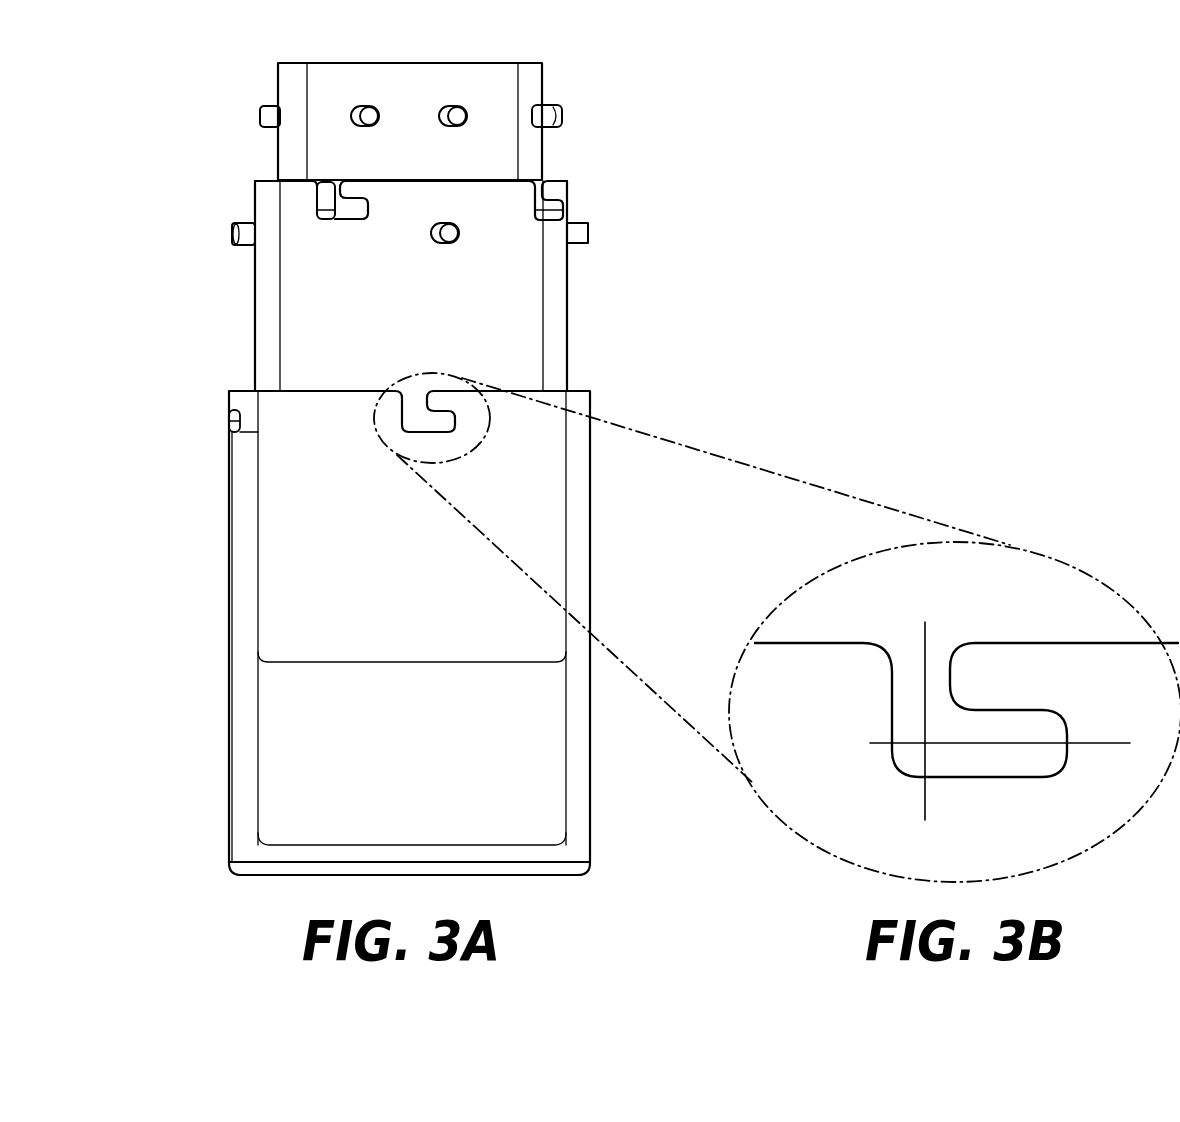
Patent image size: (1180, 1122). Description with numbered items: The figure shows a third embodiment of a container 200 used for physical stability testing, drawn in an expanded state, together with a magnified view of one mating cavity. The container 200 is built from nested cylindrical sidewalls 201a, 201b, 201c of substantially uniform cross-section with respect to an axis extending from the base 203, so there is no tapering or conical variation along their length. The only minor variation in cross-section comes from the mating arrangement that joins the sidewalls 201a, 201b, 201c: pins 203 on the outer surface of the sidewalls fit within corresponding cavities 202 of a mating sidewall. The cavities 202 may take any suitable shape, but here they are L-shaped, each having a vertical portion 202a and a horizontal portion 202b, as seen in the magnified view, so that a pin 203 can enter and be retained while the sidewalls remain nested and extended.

In FIG. 3A, the container 200 is at (134, 522).
In FIG. 3A, the sidewall 201a is at (247, 722).
In FIG. 3A, the sidewall 201b is at (273, 323).
In FIG. 3A, the sidewall 201c is at (313, 72).
In FIG. 3A, the cavity 202 is at (320, 203).
In FIG. 3B, the vertical portion 202a is at (923, 638).
In FIG. 3B, the horizontal portion 202b is at (877, 747).
In FIG. 3A, the pin 203 is at (548, 113).